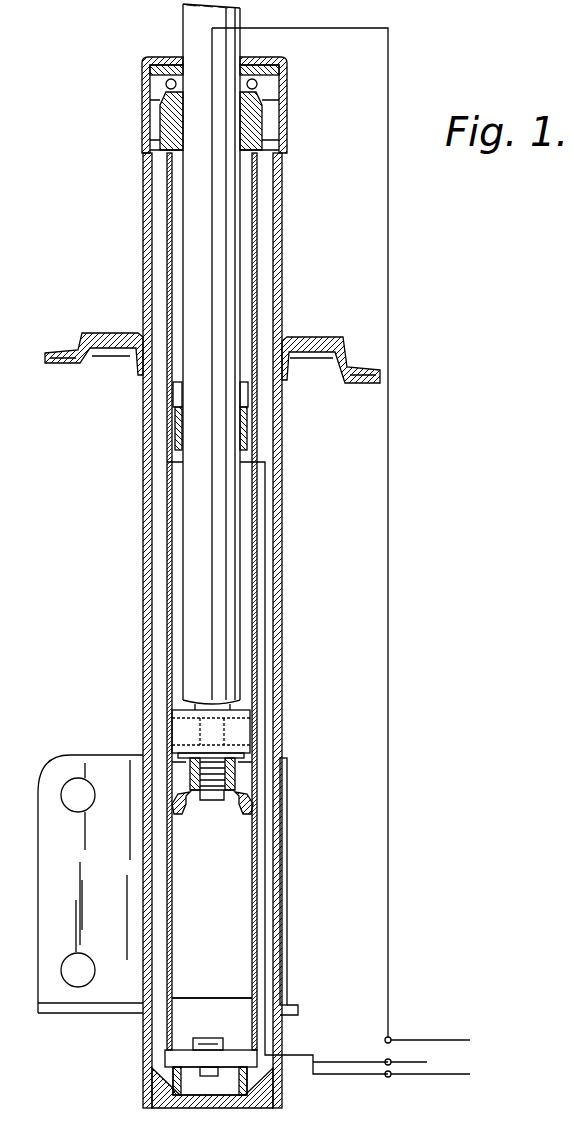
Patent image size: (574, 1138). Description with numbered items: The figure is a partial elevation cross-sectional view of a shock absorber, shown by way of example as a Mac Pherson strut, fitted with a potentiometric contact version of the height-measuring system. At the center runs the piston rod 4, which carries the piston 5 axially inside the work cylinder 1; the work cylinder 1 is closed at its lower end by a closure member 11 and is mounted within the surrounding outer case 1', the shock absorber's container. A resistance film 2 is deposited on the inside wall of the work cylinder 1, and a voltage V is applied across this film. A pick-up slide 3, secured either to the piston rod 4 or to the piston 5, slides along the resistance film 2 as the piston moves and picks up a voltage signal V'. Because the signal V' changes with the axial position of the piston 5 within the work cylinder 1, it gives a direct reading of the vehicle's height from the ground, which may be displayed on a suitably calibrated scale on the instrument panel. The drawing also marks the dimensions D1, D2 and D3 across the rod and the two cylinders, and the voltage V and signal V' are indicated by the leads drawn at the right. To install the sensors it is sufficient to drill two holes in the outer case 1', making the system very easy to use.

The piston rod 4 is at (236, 38).
The outer case 1' is at (239, 630).
The work cylinder 1 is at (277, 613).
The resistance film 2 is at (245, 952).
The piston 5 is at (252, 718).
The pick-up slide 3 is at (245, 797).
The closure member 11 is at (152, 1050).
The cylinder inner diameter D1 is at (257, 493).
The piston rod diameter D2 is at (240, 249).
The container inner diameter D3 is at (282, 550).
The voltage V is at (341, 564).
The voltage signal V' is at (468, 1050).